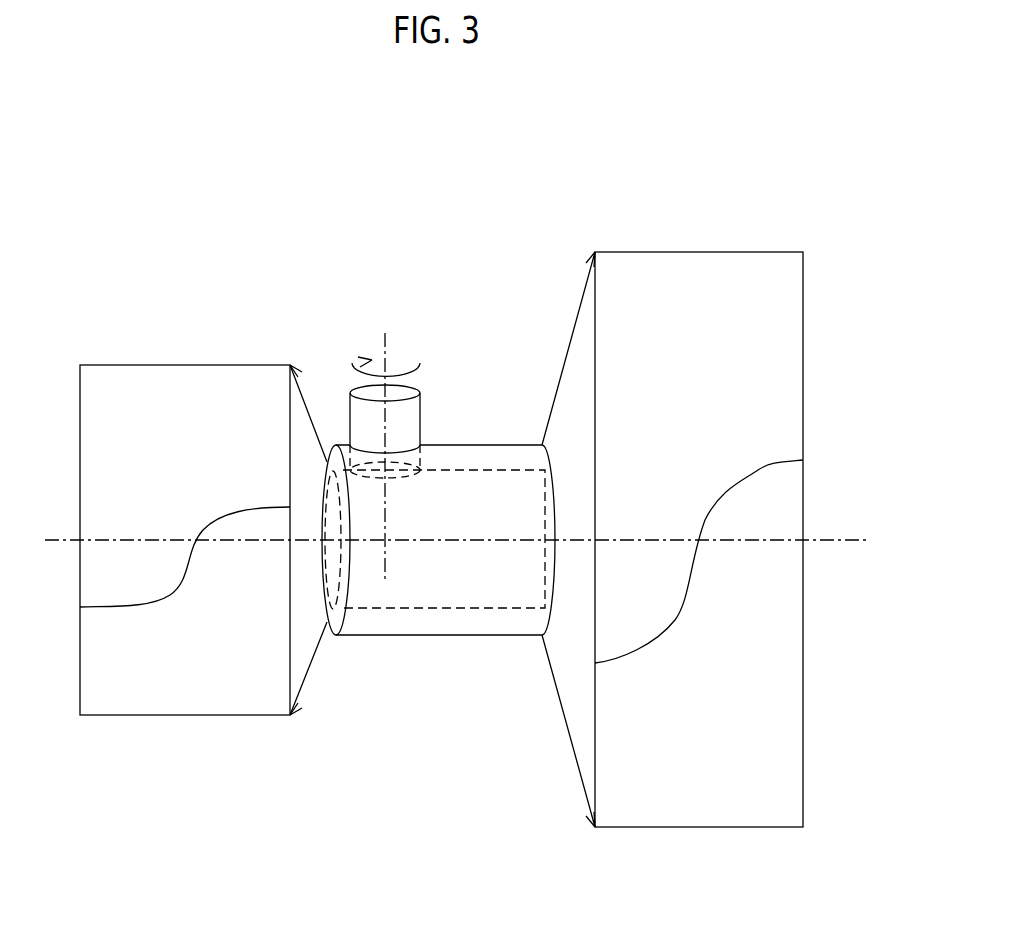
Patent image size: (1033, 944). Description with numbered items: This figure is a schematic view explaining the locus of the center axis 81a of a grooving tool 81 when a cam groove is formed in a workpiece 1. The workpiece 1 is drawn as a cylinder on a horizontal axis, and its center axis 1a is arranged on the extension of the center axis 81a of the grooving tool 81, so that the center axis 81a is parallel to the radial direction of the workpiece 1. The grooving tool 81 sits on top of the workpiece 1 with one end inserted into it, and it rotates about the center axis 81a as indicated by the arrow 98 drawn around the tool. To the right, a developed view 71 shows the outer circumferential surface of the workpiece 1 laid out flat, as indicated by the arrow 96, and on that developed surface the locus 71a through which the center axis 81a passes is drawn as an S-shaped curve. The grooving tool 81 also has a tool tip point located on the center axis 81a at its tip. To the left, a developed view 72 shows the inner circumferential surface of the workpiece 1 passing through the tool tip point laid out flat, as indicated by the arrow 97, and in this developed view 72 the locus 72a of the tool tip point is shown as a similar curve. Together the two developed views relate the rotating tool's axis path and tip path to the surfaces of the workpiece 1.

The workpiece 1 is at (508, 635).
The center axis of the workpiece 1a is at (452, 542).
The developed view 71 is at (803, 277).
The locus 71a is at (757, 465).
The developed view 72 is at (113, 365).
The locus of the tool tip point 72a is at (107, 607).
The grooving tool 81 is at (422, 418).
The center axis of the grooving tool 81a is at (387, 344).
The arrow 96 is at (568, 338).
The arrow 97 is at (305, 400).
The arrow 98 is at (350, 367).